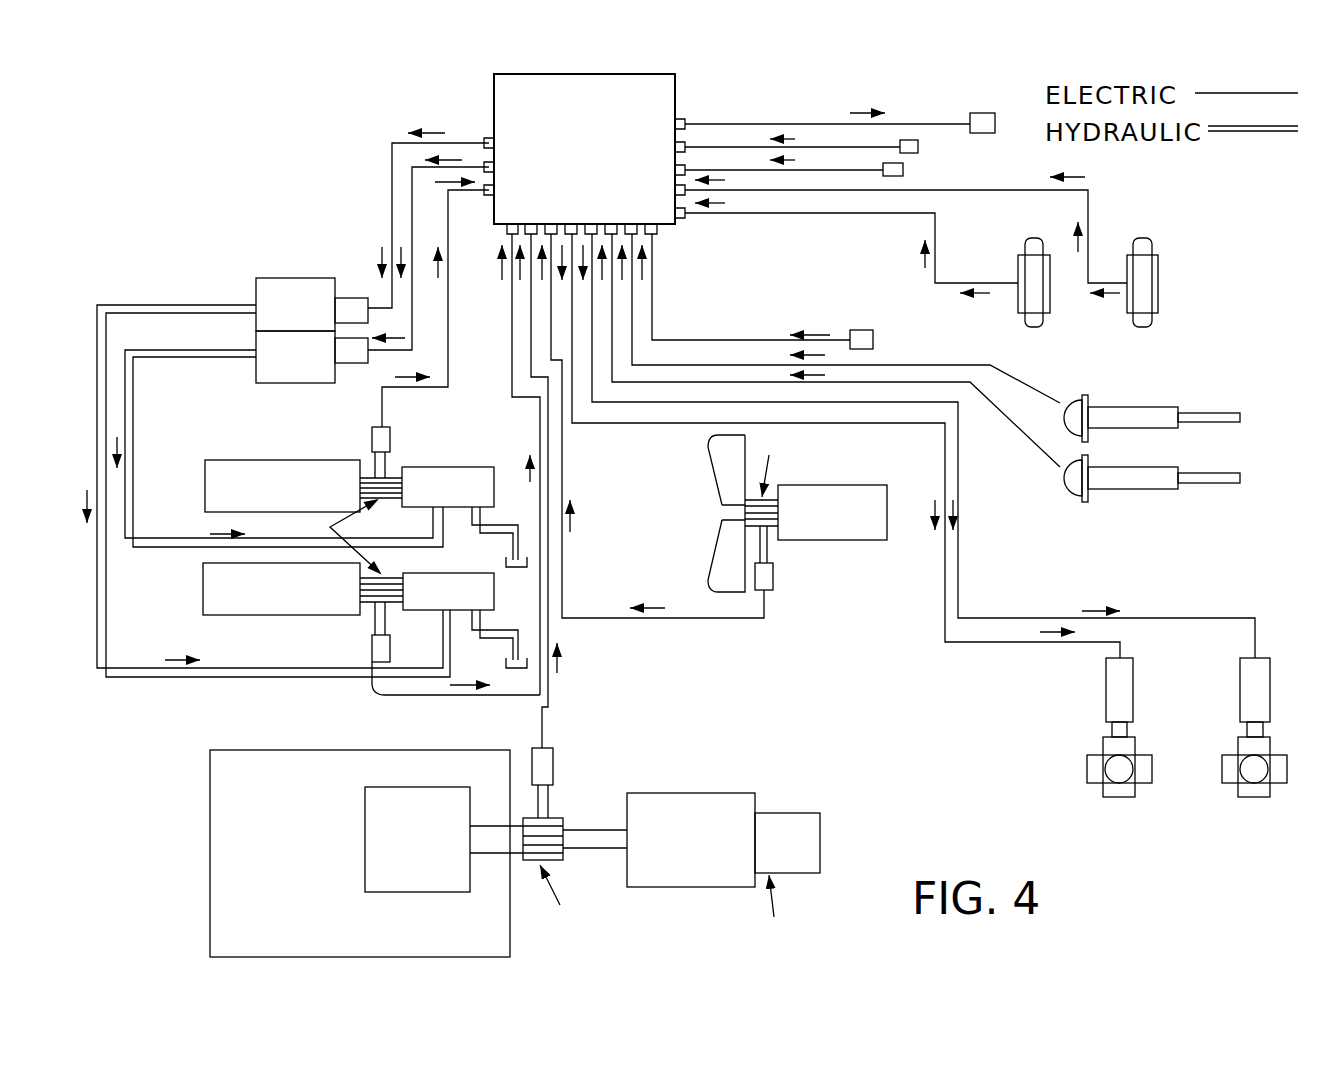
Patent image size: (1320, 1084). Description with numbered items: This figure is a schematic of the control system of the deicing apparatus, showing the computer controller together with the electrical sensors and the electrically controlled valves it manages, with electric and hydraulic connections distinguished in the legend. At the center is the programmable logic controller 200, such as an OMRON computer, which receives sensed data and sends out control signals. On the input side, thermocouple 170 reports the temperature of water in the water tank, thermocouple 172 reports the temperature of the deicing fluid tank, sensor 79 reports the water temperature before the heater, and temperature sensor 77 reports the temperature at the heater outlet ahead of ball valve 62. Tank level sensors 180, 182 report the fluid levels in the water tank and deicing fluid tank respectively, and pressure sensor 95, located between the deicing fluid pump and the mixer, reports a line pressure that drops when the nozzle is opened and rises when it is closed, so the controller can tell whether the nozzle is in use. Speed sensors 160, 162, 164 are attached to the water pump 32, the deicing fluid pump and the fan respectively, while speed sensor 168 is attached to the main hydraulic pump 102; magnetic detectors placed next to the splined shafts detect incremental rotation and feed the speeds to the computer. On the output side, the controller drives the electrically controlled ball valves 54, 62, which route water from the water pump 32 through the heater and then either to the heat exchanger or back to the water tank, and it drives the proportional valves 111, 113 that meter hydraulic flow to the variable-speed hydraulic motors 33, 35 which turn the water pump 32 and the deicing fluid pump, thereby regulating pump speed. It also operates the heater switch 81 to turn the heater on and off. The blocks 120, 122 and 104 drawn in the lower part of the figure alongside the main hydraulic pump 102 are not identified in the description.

The controller 200 is at (665, 108).
The on-off switch 81 is at (980, 113).
The temperature sensor 77 is at (918, 146).
The temperature sensor 79 is at (903, 170).
The tank level sensor 180 is at (1050, 305).
The tank level sensor 182 is at (1158, 295).
The pressure sensor 95 is at (873, 332).
The thermocouple 170 is at (1168, 407).
The thermocouple 172 is at (1168, 467).
The proportional valve 113 is at (312, 304).
The proportional valve 111 is at (312, 357).
The water pump 32 is at (258, 460).
The variable-speed hydraulic motor 33 is at (418, 467).
The variable-speed hydraulic motor 35 is at (425, 573).
The speed sensor 160 is at (390, 432).
The speed sensor 162 is at (372, 648).
The speed sensor 164 is at (773, 572).
The speed sensor 168 is at (555, 762).
The engine 120 is at (222, 782).
The transmission 122 is at (415, 787).
The main hydraulic pump 102 is at (680, 793).
The pump 104 is at (800, 813).
The ball valve 54 is at (1135, 783).
The ball valve 62 is at (1270, 783).